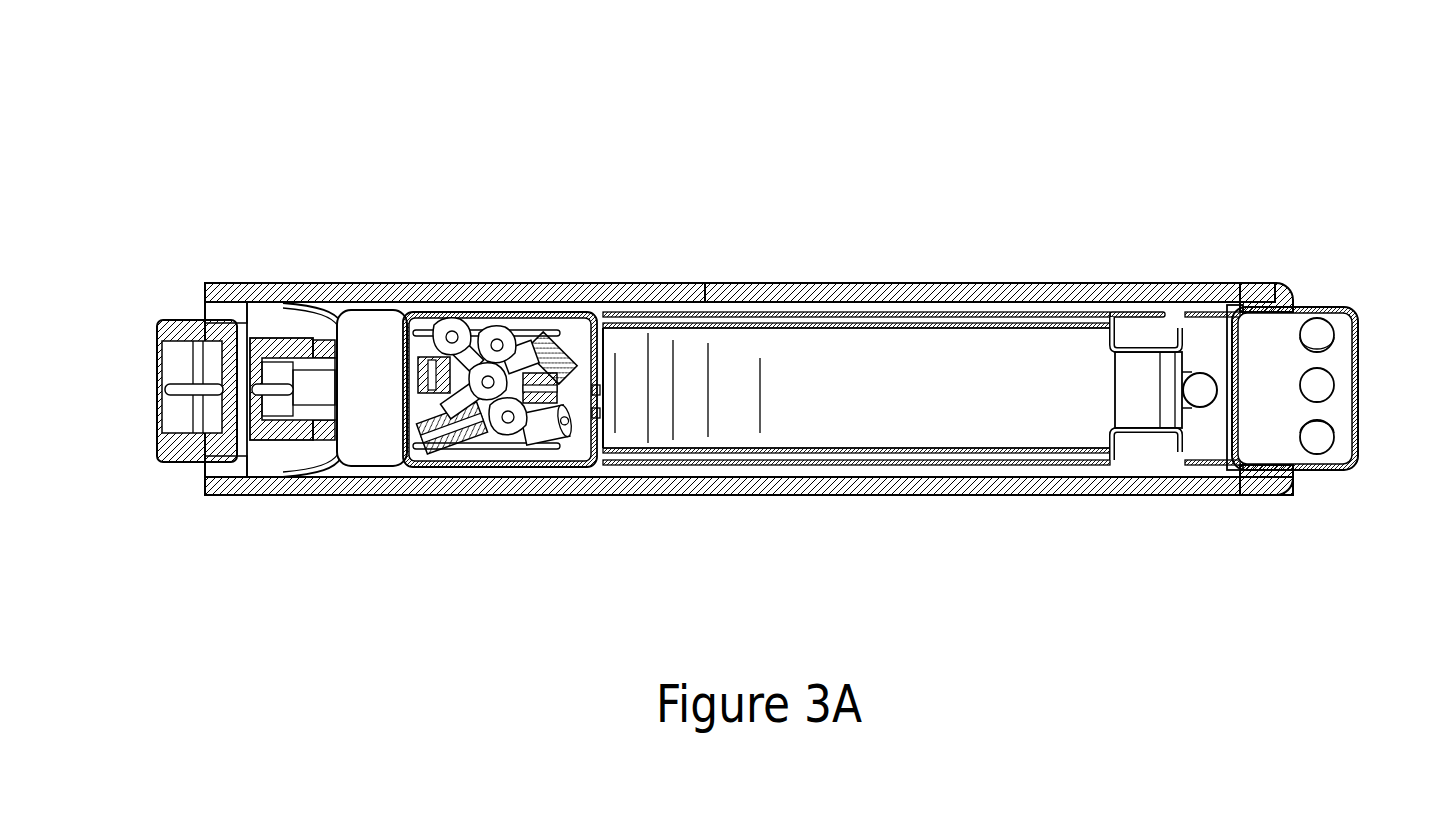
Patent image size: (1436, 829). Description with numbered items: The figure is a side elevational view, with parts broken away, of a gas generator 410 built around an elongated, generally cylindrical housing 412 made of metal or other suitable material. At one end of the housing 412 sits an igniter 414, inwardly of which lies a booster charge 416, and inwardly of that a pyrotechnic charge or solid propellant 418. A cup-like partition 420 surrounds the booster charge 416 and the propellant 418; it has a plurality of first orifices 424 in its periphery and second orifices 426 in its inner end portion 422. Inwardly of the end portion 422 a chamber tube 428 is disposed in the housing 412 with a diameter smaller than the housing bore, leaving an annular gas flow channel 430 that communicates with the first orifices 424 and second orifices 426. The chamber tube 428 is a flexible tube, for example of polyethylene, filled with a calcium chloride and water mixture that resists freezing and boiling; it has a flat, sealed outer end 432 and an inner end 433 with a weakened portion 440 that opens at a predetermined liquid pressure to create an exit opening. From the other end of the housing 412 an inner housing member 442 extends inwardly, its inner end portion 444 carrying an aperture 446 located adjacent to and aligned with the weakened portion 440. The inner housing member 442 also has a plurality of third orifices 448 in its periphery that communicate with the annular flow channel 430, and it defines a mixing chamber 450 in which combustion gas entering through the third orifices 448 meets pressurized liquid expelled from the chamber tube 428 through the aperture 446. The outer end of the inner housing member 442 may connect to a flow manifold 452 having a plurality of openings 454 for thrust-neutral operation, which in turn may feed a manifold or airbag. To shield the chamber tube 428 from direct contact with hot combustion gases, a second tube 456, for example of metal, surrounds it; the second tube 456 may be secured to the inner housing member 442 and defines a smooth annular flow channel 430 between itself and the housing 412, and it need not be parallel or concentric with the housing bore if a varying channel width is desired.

The gas generator 410 is at (962, 152).
The housing 412 is at (516, 300).
The igniter 414 is at (177, 322).
The booster charge 416 is at (378, 430).
The pyrotechnic charge or solid propellant 418 is at (490, 420).
The cup-like partition 420 is at (482, 472).
The inner end portion 422 is at (599, 377).
The first orifices 424 is at (517, 315).
The second orifices 426 is at (599, 390).
The chamber tube 428 is at (838, 458).
The annular gas flow channel 430 is at (947, 310).
The sealed outer end 432 is at (632, 350).
The inner end 433 is at (1178, 371).
The weakened portion 440 is at (1178, 393).
The inner housing member 442 is at (1206, 475).
The inner end portion 444 is at (1165, 325).
The aperture 446 is at (1197, 374).
The third orifices 448 is at (1202, 373).
The mixing chamber 450 is at (1195, 440).
The flow manifold 452 is at (1358, 392).
The openings 454 is at (1317, 442).
The second tube 456 is at (740, 322).